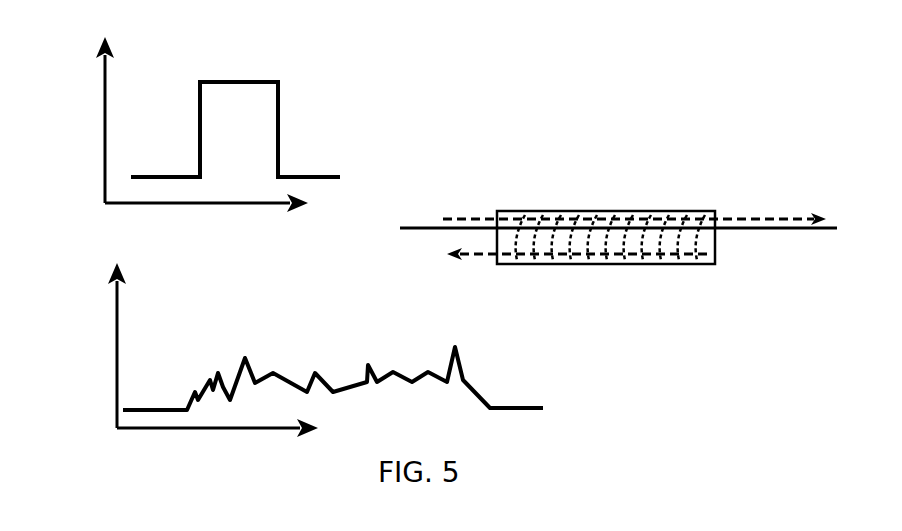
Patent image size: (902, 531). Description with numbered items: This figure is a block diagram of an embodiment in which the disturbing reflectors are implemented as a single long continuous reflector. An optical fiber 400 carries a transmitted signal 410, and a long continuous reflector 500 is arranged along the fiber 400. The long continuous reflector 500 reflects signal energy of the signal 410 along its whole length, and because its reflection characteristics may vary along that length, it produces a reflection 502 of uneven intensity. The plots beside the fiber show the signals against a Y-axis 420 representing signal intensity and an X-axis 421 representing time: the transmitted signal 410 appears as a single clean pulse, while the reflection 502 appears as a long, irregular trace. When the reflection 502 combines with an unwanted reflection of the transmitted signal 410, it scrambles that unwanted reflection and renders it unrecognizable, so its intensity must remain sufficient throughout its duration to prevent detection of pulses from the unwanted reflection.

The optical fiber 400 is at (430, 230).
The original signal 410 is at (305, 173).
The Y-axis 420 is at (105, 118).
The X-axis 421 is at (238, 205).
The long continuous reflector 500 is at (568, 212).
The reflection 502 is at (133, 410).